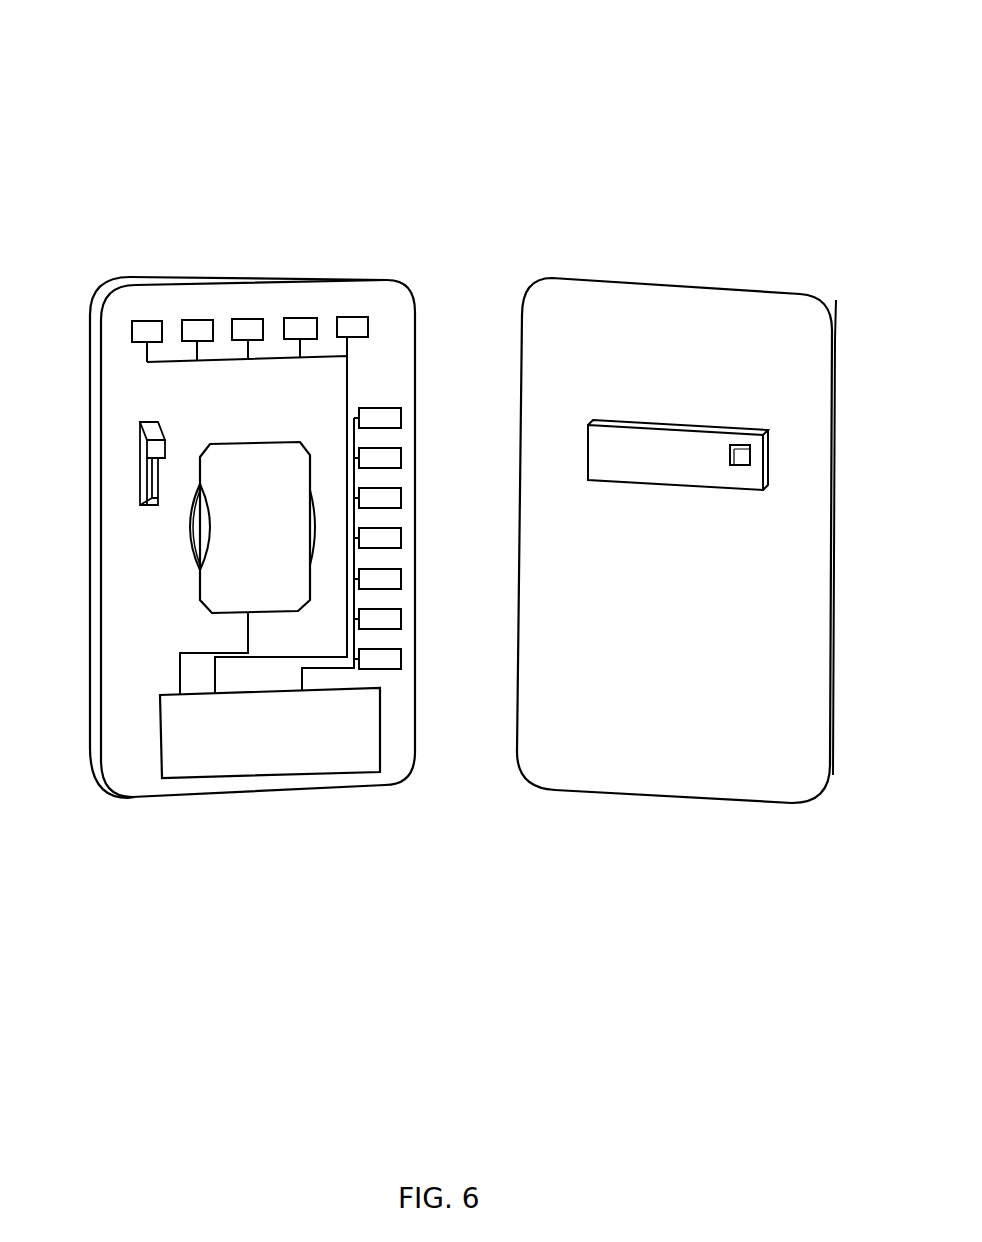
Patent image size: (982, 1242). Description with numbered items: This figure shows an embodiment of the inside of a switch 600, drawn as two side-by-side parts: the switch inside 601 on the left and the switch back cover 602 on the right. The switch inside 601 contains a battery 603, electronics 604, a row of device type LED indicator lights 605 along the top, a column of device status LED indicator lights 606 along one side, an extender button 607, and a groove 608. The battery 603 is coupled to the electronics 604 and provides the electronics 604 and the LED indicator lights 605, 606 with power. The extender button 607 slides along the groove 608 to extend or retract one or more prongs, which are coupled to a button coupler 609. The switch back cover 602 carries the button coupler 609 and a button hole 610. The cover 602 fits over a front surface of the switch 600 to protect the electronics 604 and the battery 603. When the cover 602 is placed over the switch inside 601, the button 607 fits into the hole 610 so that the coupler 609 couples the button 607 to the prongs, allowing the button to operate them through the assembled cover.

The switch 600 is at (143, 71).
The switch inside 601 is at (178, 648).
The switch back cover 602 is at (695, 652).
The battery 603 is at (286, 541).
The electronics 604 is at (298, 747).
The device type LED indicator lights 605 is at (250, 310).
The device status LED indicator lights 606 is at (403, 518).
The extender button 607 is at (147, 447).
The groove 608 is at (140, 487).
The button coupler 609 is at (673, 468).
The button hole 610 is at (738, 445).